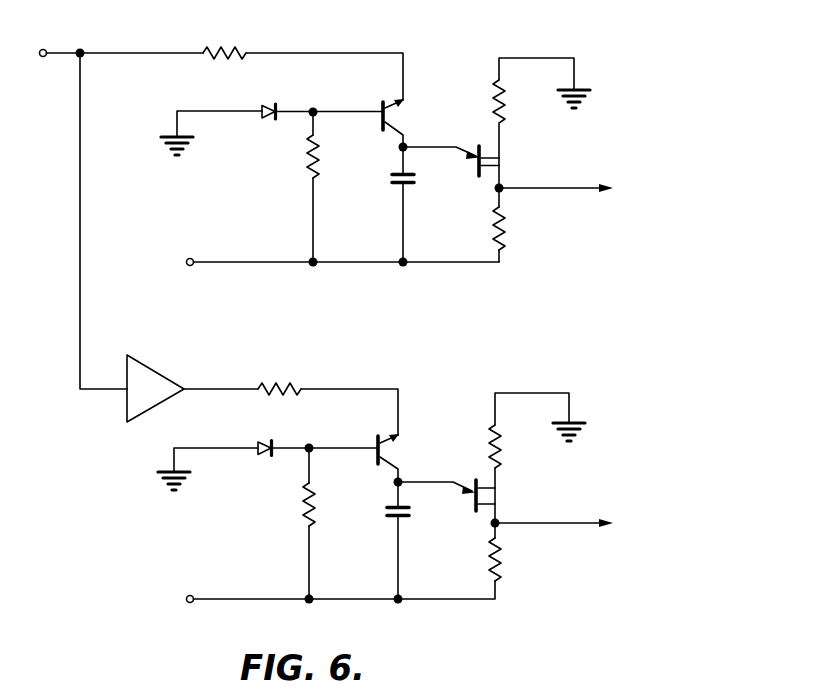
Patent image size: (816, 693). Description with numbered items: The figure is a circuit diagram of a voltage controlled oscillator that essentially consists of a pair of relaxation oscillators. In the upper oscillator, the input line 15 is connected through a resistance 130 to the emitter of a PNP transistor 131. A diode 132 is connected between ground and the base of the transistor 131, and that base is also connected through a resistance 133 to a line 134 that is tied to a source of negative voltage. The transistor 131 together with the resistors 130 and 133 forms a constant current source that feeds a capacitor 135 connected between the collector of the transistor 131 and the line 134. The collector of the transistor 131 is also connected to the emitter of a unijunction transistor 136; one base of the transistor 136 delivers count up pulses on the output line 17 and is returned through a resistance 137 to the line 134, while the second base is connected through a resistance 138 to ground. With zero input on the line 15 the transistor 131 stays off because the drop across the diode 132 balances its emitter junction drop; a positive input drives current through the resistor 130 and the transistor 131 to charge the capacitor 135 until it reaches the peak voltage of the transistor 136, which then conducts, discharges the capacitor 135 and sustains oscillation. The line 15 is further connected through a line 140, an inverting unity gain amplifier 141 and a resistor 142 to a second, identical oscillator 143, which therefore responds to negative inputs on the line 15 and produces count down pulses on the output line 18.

The line 15 is at (62, 52).
The output line 17 is at (553, 190).
The output line 18 is at (516, 521).
The resistance 130 is at (244, 53).
The PNP transistor 131 is at (384, 104).
The diode 132 is at (268, 109).
The resistance 133 is at (310, 168).
The line 134 is at (236, 250).
The capacitor 135 is at (393, 173).
The unijunction transistor 136 is at (502, 161).
The resistance 137 is at (494, 211).
The resistance 138 is at (495, 108).
The line 140 is at (78, 197).
The inverting unity gain amplifier 141 is at (171, 382).
The resistor 142 is at (297, 382).
The oscillator 143 is at (436, 411).